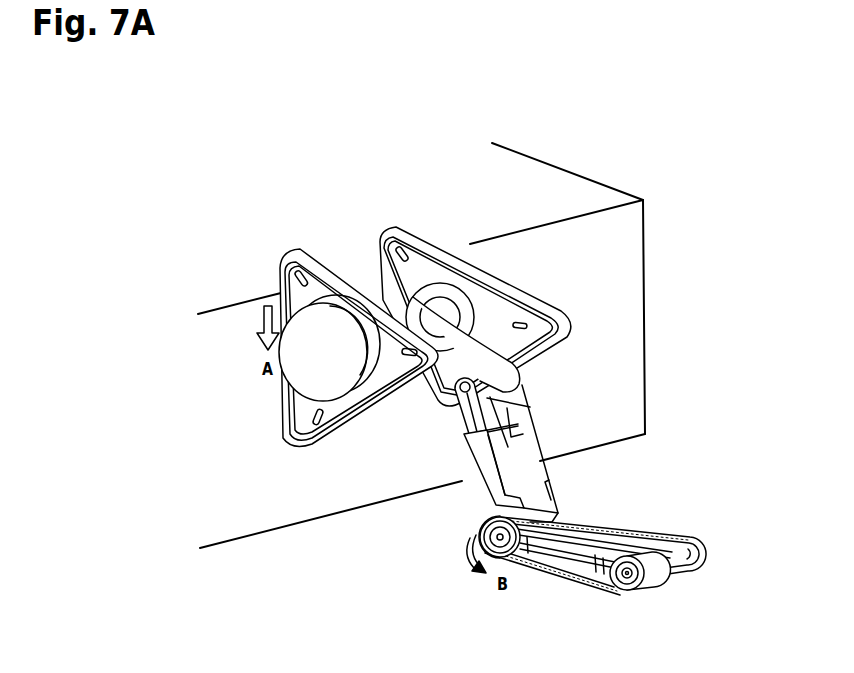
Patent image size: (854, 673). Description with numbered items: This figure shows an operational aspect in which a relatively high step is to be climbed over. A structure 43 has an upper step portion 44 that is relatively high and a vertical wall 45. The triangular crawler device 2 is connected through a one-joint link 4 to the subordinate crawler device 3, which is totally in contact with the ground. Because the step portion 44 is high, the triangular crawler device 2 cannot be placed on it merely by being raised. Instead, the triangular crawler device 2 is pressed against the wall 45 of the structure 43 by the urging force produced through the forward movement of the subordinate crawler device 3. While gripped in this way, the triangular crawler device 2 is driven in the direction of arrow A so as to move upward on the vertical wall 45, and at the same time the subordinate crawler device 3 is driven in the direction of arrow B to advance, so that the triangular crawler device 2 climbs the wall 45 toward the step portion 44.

The triangular crawler device 2 is at (339, 237).
The subordinate crawler device 3 is at (647, 512).
The one-joint link 4 is at (461, 454).
The structure 43 is at (463, 330).
The step portion 44 is at (505, 192).
The wall 45 is at (607, 290).